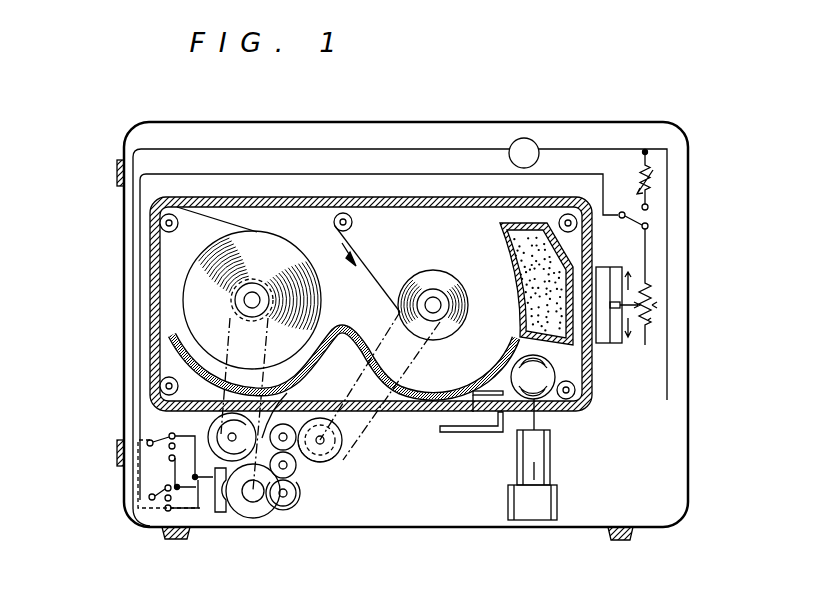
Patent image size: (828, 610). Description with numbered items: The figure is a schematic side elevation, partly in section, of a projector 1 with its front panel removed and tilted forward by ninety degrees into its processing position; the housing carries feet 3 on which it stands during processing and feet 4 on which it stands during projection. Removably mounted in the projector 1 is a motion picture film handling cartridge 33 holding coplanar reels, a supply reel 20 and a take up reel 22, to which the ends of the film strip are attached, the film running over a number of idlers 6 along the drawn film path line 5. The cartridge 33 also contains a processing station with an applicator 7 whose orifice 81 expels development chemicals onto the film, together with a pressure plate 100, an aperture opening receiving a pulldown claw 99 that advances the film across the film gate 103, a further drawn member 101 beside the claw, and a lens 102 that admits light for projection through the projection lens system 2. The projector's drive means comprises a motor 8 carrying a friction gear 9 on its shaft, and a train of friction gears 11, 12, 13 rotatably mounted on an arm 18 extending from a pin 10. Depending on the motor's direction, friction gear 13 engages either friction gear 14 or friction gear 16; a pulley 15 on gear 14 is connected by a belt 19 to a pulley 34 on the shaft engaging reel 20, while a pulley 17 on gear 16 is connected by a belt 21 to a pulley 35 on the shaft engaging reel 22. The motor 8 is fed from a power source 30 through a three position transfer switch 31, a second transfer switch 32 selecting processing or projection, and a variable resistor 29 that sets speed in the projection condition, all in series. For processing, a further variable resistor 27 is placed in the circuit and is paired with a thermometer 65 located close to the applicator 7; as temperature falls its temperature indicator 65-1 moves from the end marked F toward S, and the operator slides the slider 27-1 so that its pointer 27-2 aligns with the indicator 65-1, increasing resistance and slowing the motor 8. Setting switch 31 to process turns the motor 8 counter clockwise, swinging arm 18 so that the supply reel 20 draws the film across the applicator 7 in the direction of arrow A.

The projector 1 is at (380, 122).
The projection lens system 2 is at (537, 512).
The feet 3 is at (170, 538).
The feet 4 is at (117, 172).
The lever 5 is at (362, 258).
The idlers 6 is at (158, 206).
The applicator 7 is at (528, 272).
The motor 8 is at (250, 505).
The friction gear 9 is at (287, 393).
The pin 10 is at (283, 506).
The friction gear 11 is at (264, 500).
The friction gear 12 is at (297, 470).
The friction gear 13 is at (297, 447).
The friction gear 14 is at (338, 457).
The pulley 15 is at (326, 444).
The friction gear 16 is at (222, 455).
The pulley 17 is at (222, 492).
The arm 18 is at (297, 500).
The belt 19 is at (357, 422).
The supply reel 20 is at (436, 305).
The belt 21 is at (222, 343).
The take up reel 22 is at (234, 297).
The variable resistor 27 is at (651, 286).
The slider 27-1 is at (655, 305).
The pointer 27-2 is at (652, 318).
The variable resistor 29 is at (646, 162).
The power source 30 is at (524, 138).
The transfer switch 31 is at (138, 480).
The transfer switch 32 is at (623, 211).
The motion picture film handling cartridge 33 is at (256, 197).
The pulley 34 is at (434, 322).
The pulley 35 is at (235, 306).
The thermometer 65 is at (606, 345).
The temperature indicator 65-1 is at (617, 310).
The orifice 81 is at (575, 345).
The pulldown claw 99 is at (500, 432).
The pressure plate 100 is at (493, 412).
The lever 101 is at (477, 412).
The lens 102 is at (540, 462).
The film gate 103 is at (538, 412).